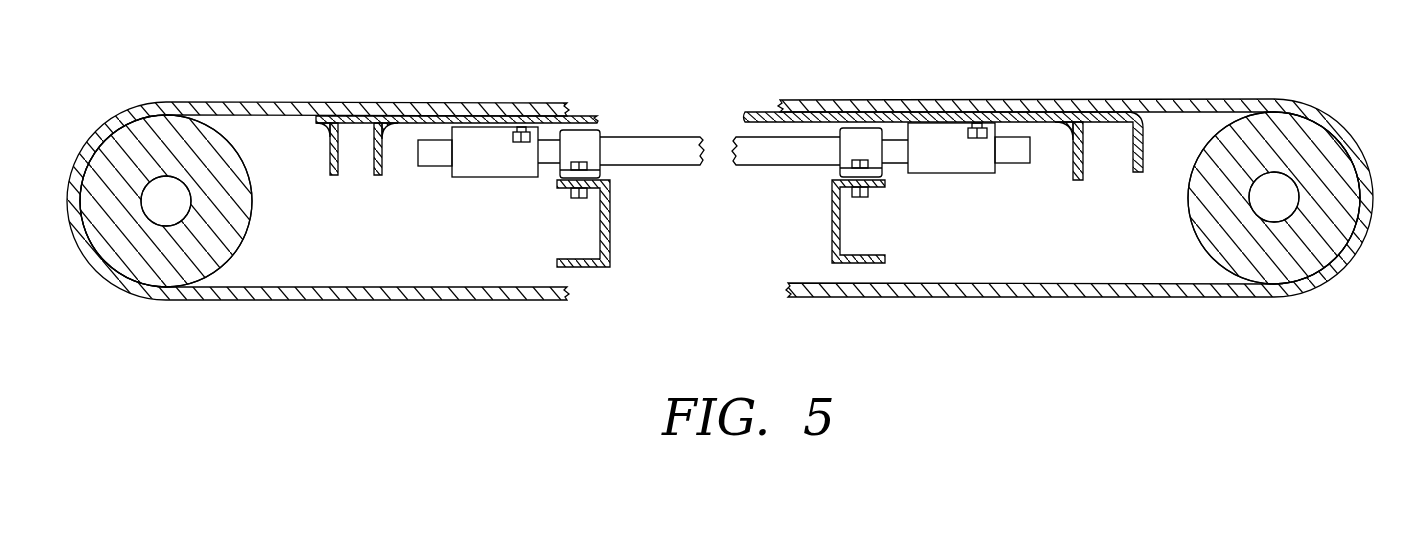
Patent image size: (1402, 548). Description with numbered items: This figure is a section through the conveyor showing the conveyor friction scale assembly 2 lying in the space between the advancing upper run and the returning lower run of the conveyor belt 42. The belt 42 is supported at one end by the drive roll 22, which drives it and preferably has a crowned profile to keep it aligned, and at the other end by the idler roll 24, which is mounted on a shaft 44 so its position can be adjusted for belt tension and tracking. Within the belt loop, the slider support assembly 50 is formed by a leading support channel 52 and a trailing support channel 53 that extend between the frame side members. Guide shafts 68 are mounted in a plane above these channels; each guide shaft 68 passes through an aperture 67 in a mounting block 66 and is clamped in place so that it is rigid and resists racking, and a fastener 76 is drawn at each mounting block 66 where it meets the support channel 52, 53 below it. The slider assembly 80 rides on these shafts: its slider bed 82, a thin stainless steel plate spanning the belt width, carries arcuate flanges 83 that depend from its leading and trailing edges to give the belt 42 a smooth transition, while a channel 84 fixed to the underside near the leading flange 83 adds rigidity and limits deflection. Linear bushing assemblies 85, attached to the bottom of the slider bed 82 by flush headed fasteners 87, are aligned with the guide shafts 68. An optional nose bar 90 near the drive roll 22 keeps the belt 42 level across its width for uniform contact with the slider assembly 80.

The conveyor friction scale assembly 2 is at (853, 262).
The drive roll 22 is at (142, 148).
The idler roll 24 is at (1274, 193).
The conveyor belt 42 is at (720, 168).
The shaft 44 is at (1287, 203).
The slider support assembly 50 is at (604, 267).
The leading support channel 52 is at (858, 265).
The trailing support channel 53 is at (583, 268).
The mounting block 66 is at (602, 130).
The aperture 67 is at (602, 155).
The guide shaft 68 is at (690, 165).
The fastening bolt 76 is at (567, 193).
The slider assembly 80 is at (593, 115).
The slider bed 82 is at (1030, 102).
The arcuate flange 83 is at (360, 125).
The channel 84 is at (1083, 150).
The linear bushing assembly 85 is at (462, 170).
The flush headed fastener 87 is at (518, 142).
The nose bar 90 is at (350, 103).